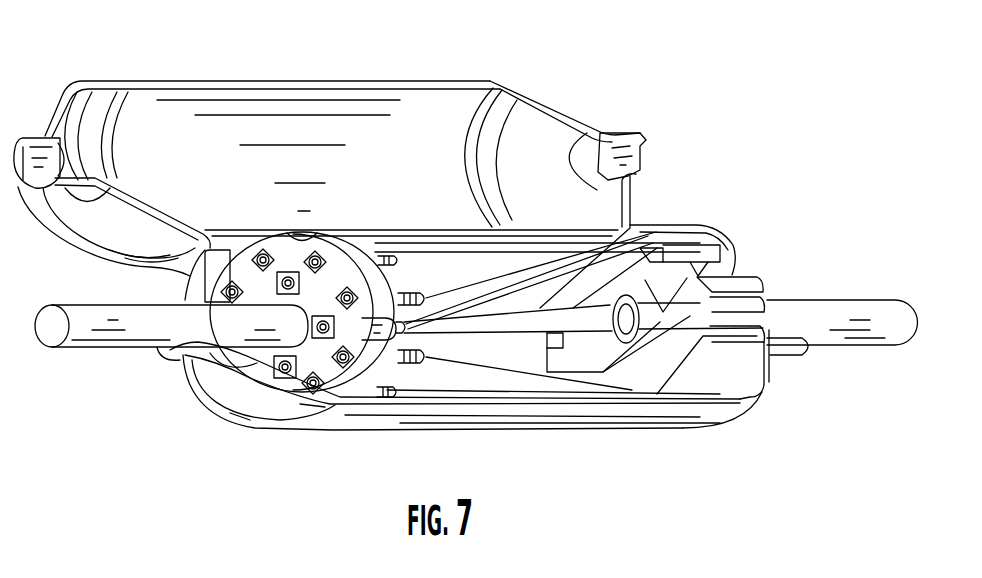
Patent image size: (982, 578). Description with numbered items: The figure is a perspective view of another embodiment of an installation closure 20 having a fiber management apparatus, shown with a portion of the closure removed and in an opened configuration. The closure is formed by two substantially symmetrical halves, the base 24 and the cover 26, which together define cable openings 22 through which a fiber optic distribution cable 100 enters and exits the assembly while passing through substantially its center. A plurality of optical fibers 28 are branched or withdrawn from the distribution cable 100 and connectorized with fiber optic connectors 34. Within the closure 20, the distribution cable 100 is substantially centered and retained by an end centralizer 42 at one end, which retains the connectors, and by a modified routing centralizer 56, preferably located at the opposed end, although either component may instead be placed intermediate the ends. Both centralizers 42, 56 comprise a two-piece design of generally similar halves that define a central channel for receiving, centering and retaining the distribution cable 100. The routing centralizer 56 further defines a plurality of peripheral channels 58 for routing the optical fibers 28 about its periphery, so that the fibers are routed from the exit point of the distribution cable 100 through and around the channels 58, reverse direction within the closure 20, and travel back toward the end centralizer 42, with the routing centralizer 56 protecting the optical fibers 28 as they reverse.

The installation closure 20 is at (686, 101).
The cable openings 22 is at (22, 192).
The base 24 is at (263, 430).
The cover 26 is at (147, 78).
The optical fibers 28 is at (516, 290).
The fiber optic connectors 34 is at (410, 368).
The end centralizer 42 is at (372, 382).
The routing centralizer 56 is at (690, 232).
The channels 58 is at (763, 288).
The distribution cable 100 is at (93, 347).